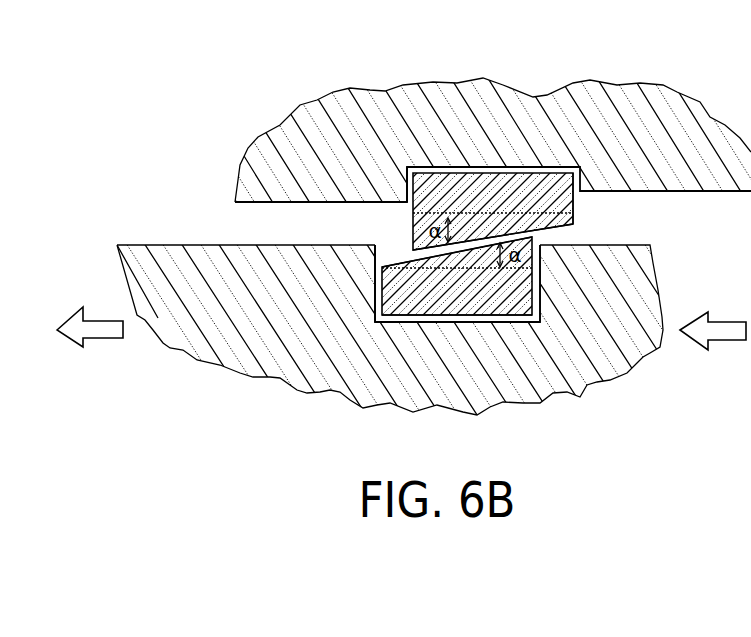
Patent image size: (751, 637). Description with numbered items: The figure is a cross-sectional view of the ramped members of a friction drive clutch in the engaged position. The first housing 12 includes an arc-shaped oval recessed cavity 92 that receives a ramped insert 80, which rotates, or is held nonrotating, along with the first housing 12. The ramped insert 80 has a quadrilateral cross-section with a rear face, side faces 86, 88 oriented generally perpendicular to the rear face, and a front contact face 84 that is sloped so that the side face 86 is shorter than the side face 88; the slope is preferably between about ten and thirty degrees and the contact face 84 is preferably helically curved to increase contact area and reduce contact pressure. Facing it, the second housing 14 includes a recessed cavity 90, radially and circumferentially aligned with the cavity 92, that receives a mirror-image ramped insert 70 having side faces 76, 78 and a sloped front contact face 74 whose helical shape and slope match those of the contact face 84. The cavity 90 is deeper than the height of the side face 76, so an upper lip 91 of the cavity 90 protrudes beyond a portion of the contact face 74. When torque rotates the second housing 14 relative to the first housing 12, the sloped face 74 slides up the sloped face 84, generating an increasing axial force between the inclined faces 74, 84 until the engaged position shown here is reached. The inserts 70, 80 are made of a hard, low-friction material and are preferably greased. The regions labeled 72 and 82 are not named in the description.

The first housing 12 is at (572, 127).
The second housing 14 is at (580, 373).
The ramped insert 70 is at (513, 286).
The bottom surface of first wedge element 72 is at (462, 323).
The front contact face 74 is at (398, 258).
The side face 76 is at (374, 300).
The side face 78 is at (540, 300).
The ramped insert 80 is at (515, 190).
The side wall of upper pocket 82 is at (425, 168).
The front contact face 84 is at (533, 223).
The side face 86 is at (573, 198).
The side face 88 is at (403, 211).
The recessed cavity 90 is at (505, 324).
The upper lip 91 is at (375, 247).
The recessed cavity 92 is at (460, 166).